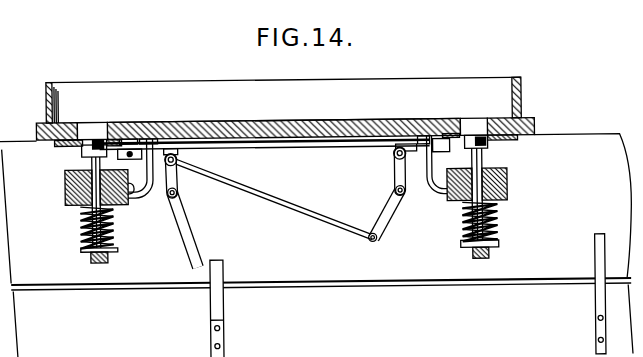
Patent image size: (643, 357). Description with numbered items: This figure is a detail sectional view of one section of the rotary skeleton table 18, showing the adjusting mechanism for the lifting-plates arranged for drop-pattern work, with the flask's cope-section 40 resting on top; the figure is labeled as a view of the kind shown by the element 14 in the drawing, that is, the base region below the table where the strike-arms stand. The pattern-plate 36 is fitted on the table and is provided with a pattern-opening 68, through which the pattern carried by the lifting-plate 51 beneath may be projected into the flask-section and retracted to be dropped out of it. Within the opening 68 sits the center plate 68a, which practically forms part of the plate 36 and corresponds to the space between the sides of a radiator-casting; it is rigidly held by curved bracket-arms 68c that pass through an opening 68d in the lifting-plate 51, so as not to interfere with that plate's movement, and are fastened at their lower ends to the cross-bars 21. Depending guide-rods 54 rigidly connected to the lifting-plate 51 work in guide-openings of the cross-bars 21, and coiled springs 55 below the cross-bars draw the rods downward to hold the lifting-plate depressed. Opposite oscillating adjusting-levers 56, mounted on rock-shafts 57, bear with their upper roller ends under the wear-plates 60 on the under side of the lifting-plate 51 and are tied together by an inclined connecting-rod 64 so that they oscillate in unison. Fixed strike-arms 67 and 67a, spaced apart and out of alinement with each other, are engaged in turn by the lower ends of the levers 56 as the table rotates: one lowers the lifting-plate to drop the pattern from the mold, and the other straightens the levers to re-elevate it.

The cope-section 40 is at (413, 80).
The pattern-plate 36 is at (285, 121).
The pattern-opening 68 is at (93, 121).
The center plate 68a is at (285, 117).
The curved bracket-arms 68c is at (432, 192).
The opening in the lifting-plate 68d is at (325, 148).
The lifting-plate 51 is at (57, 144).
The guide-rods 54 is at (113, 235).
The cross-bars 21 is at (68, 182).
The coiled springs 55 is at (80, 227).
The rock-shafts 57 is at (182, 196).
The oscillating adjusting-levers 56 is at (198, 236).
The wear-plates 60 is at (265, 150).
The inclined connecting-rods 64 is at (248, 187).
The strike-arm 67 is at (220, 304).
The strike-arm 67a is at (597, 288).
The floor / base 14 is at (321, 304).
The skeleton table 18 is at (316, 245).